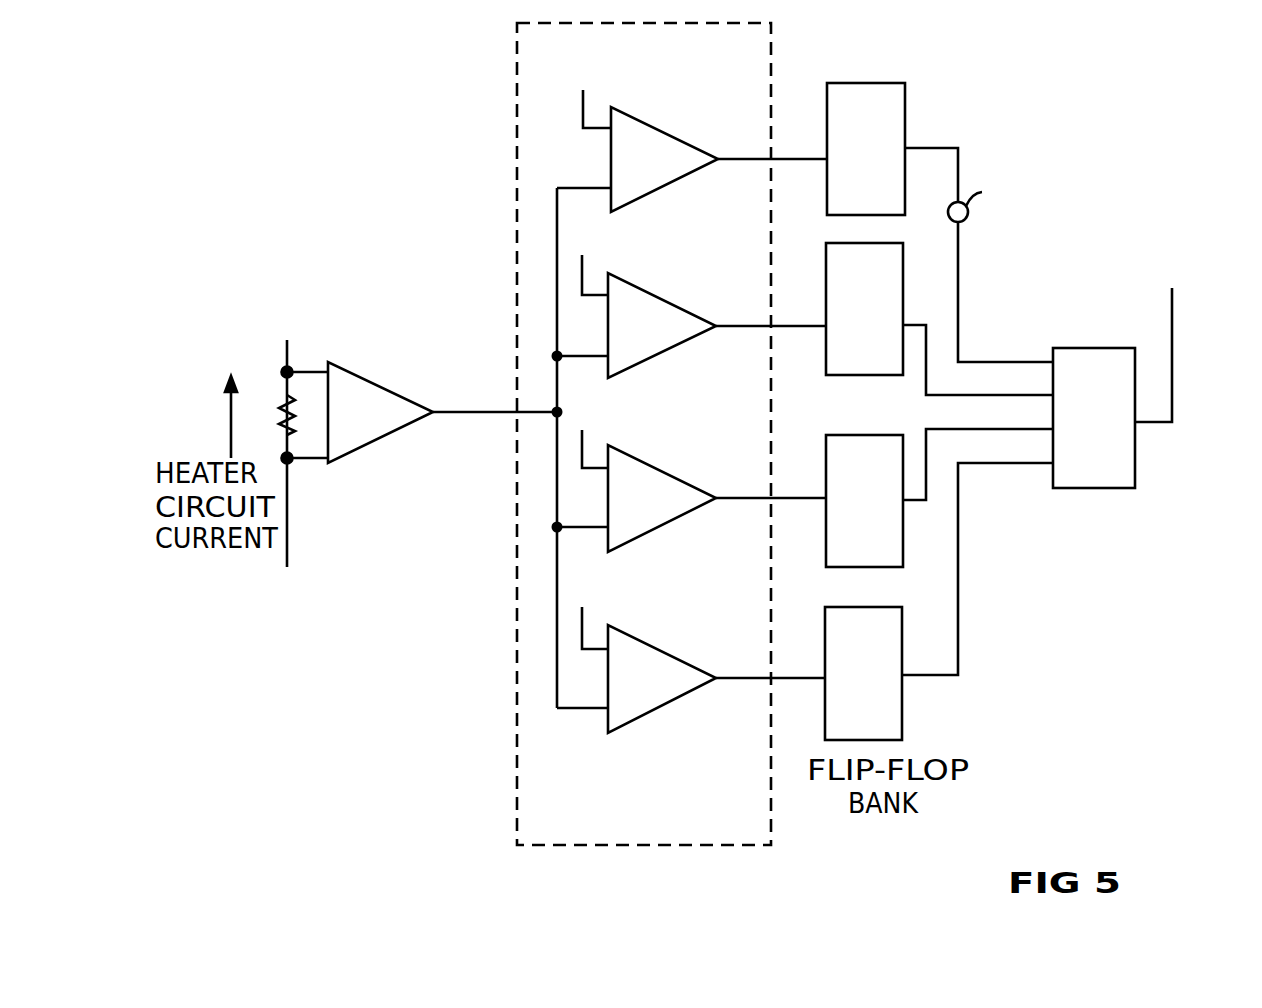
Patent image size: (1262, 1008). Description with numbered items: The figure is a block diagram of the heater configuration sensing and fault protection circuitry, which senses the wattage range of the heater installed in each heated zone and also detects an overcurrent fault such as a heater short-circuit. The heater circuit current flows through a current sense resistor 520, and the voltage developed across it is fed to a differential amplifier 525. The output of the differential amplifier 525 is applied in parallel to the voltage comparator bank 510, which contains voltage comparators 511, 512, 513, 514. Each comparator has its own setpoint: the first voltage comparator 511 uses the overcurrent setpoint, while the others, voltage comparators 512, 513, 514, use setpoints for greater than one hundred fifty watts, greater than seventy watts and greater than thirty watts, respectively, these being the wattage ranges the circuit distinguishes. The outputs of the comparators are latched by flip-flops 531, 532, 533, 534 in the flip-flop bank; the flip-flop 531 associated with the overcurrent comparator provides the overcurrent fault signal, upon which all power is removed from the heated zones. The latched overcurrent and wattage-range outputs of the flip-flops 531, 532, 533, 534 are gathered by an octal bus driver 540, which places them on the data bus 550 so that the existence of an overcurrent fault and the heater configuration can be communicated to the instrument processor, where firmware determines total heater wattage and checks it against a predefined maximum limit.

The voltage comparator bank 510 is at (515, 113).
The voltage comparator 511 is at (663, 128).
The voltage comparator 512 is at (652, 288).
The voltage comparator 513 is at (688, 480).
The voltage comparator 514 is at (682, 657).
The current sense resistor 520 is at (297, 400).
The differential amplifier 525 is at (385, 387).
The flip-flop 531 is at (905, 110).
The flip-flop 532 is at (903, 290).
The flip-flop 533 is at (826, 465).
The flip-flop 534 is at (825, 645).
The octal bus driver 540 is at (1136, 476).
The data bus 550 is at (1172, 330).